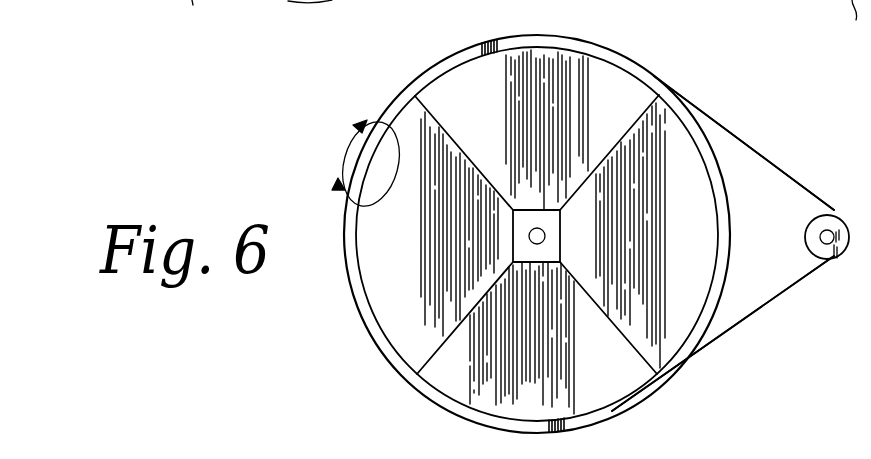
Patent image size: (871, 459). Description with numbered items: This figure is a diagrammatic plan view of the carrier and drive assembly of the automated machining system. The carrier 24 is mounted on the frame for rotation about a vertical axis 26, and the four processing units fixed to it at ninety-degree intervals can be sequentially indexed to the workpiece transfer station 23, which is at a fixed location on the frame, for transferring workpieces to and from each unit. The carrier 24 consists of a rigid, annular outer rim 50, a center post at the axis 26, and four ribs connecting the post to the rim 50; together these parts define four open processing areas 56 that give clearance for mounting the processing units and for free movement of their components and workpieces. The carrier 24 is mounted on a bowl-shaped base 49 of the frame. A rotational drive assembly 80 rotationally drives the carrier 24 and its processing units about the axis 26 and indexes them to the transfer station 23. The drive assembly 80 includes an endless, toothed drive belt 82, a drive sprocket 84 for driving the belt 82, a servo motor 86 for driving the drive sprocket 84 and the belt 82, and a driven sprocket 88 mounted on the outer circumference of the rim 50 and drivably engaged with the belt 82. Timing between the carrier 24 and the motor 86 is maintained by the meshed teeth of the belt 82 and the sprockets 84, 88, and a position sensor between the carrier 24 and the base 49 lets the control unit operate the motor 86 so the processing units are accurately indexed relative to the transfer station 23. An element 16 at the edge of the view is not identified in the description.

The workpiece transfer station 23 is at (338, 210).
The carrier 24 is at (597, 45).
The vertical axis 26 is at (536, 233).
The outer rim 50 is at (612, 411).
The rotational drive assembly 80 is at (727, 97).
The drive belt 82 is at (760, 313).
The drive sprocket 84 is at (805, 228).
The servo motor 86 is at (828, 236).
The driven sprocket 88 is at (731, 268).
The open processing areas 56 is at (182, 22).
The bowl-shaped base 49 is at (863, 46).
The element of adjacent figure 16 is at (863, 322).